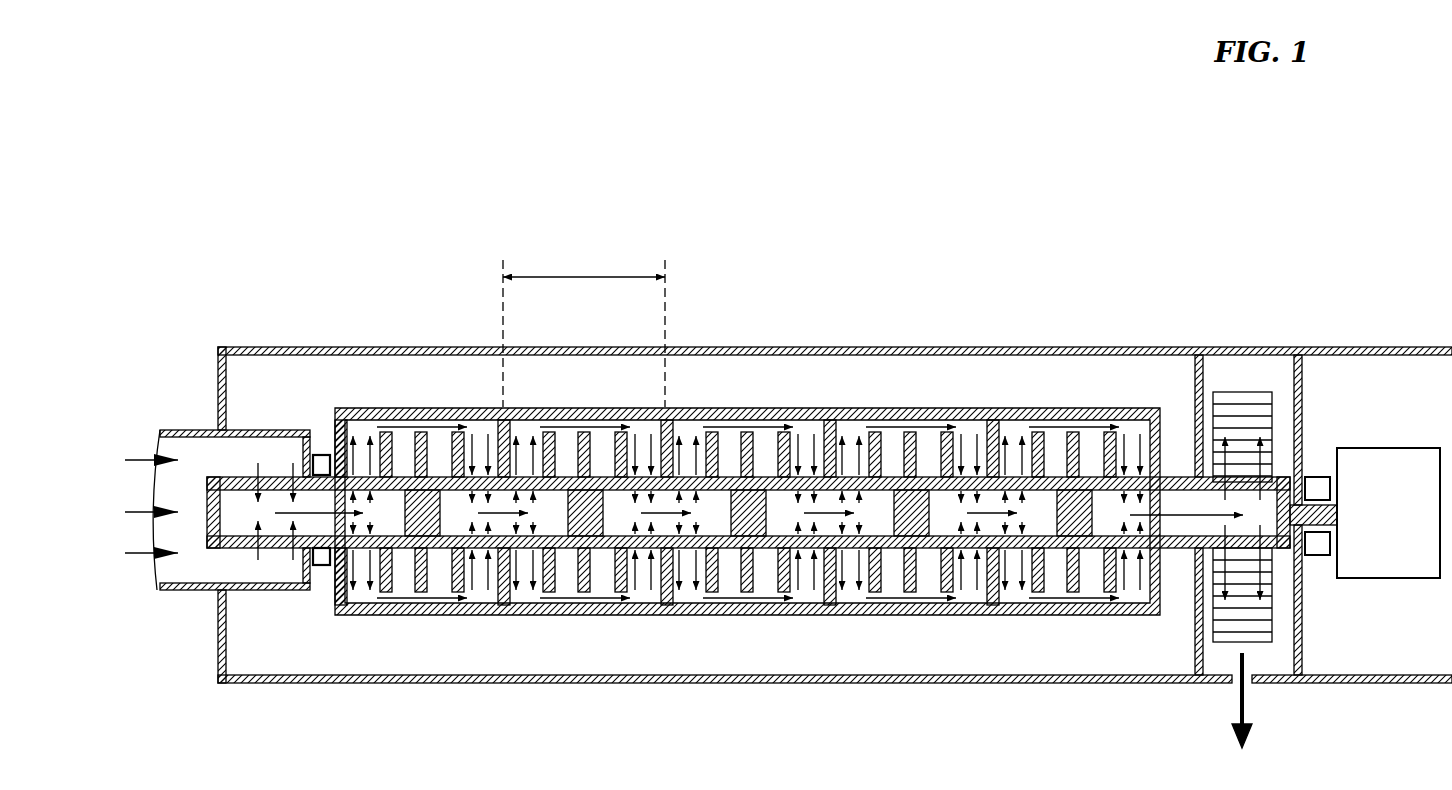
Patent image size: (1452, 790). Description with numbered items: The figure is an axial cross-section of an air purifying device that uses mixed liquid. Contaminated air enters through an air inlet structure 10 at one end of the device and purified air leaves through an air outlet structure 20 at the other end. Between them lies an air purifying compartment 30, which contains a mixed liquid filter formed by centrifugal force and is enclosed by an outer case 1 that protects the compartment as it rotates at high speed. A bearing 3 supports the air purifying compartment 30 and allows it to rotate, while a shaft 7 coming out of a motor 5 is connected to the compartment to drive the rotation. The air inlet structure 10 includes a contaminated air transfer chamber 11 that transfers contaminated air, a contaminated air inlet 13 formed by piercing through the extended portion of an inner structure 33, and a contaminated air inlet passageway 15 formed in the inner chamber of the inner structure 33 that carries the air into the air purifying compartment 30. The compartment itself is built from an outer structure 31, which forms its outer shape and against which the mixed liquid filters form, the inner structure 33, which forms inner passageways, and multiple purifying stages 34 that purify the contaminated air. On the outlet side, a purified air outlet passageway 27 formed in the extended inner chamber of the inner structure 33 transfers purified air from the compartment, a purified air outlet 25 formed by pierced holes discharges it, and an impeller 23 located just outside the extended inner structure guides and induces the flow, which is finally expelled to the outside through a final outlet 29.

The outer case 1 is at (1216, 350).
The bearing 3 is at (321, 455).
The motor 5 is at (1386, 448).
The shaft 7 is at (1317, 556).
The air inlet structure 10 is at (178, 428).
The contaminated air transfer chamber 11 is at (258, 592).
The contaminated air inlet 13 is at (258, 477).
The contaminated air inlet passageway 15 is at (325, 565).
The air outlet structure 20 is at (1272, 348).
The impeller 23 is at (1225, 642).
The purified air outlet 25 is at (1205, 538).
The purified air outlet passageway 27 is at (1173, 535).
The final outlet 29 is at (1253, 683).
The air purifying compartment 30 is at (702, 407).
The outer structure 31 is at (887, 412).
The inner structure 33 is at (928, 477).
The purifying stages 34 is at (558, 408).